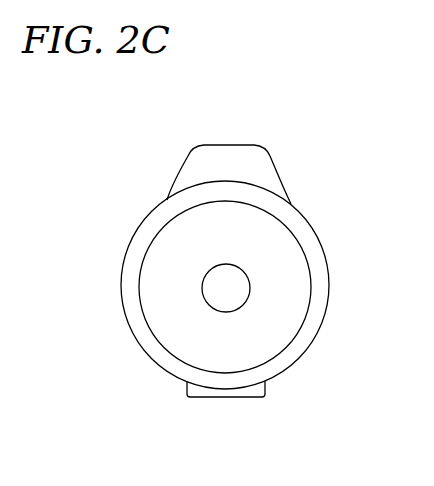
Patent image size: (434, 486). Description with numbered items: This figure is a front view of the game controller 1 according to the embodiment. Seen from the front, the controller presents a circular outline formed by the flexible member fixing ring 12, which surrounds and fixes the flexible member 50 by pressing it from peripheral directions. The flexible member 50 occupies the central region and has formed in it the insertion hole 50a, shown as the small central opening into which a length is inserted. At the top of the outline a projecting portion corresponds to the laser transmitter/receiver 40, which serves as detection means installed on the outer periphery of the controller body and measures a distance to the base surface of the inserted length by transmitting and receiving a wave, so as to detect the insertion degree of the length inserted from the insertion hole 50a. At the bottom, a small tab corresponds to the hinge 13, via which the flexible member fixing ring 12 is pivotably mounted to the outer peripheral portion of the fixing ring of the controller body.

The game controller 1 is at (315, 132).
The flexible member fixing ring 12 is at (300, 363).
The hinge 13 is at (238, 398).
The laser transmitter/receiver 40 is at (230, 143).
The flexible member 50 is at (283, 253).
The insertion hole 50a is at (250, 288).